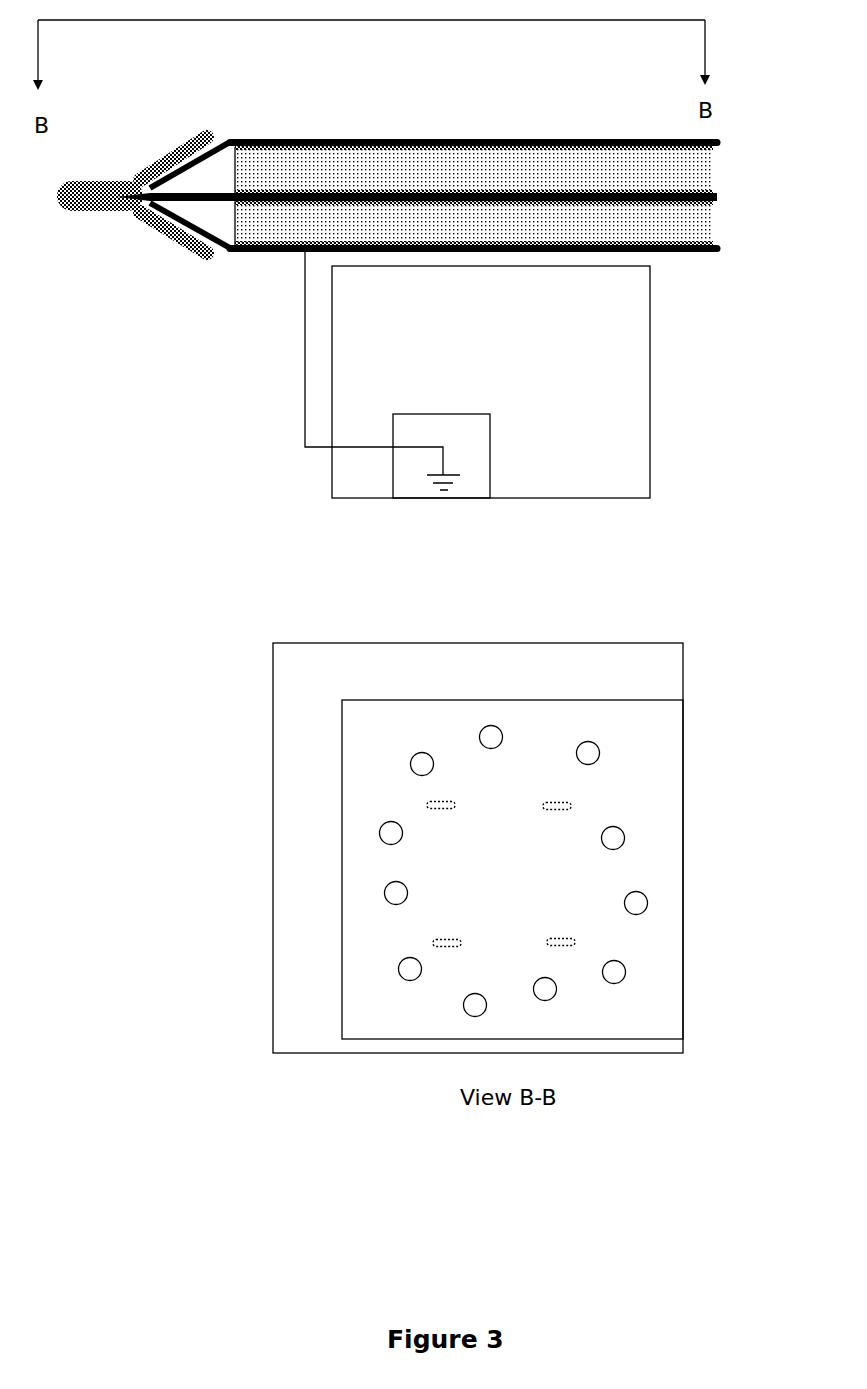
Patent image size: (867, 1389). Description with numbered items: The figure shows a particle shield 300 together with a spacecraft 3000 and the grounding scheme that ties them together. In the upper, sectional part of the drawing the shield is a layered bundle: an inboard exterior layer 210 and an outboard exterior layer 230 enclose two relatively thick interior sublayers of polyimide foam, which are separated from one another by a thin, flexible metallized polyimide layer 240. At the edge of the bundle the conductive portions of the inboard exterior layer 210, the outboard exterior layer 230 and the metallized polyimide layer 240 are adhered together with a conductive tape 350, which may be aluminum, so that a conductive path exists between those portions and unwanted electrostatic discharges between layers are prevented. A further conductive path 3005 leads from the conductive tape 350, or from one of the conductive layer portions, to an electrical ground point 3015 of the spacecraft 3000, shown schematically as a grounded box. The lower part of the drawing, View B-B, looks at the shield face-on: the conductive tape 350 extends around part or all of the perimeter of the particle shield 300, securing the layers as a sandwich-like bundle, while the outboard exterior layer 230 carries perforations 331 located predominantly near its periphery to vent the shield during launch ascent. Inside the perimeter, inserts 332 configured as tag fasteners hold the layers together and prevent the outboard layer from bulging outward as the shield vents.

The inboard exterior layer 210 is at (700, 254).
The outboard exterior layer 230 is at (717, 137).
The metallized polyimide layer 240 is at (718, 195).
The particle shield 300 is at (200, 600).
The perforations 331 is at (614, 972).
The inserts 332 is at (455, 806).
The conductive tape 350 is at (100, 202).
The spacecraft 3000 is at (650, 368).
The conductive path 3005 is at (300, 421).
The electrical ground point 3015 is at (425, 485).